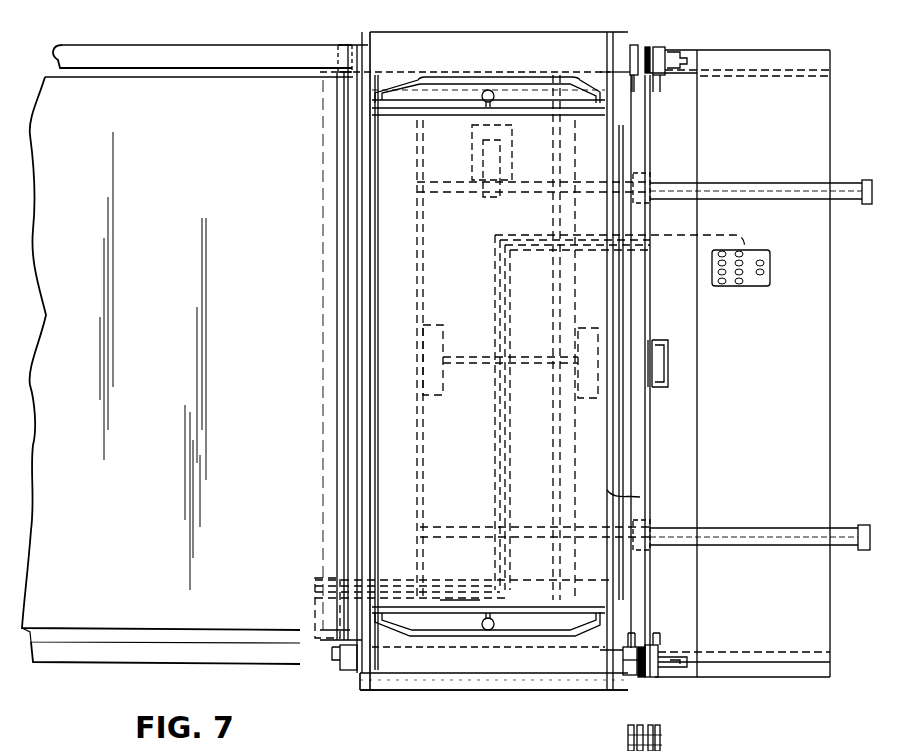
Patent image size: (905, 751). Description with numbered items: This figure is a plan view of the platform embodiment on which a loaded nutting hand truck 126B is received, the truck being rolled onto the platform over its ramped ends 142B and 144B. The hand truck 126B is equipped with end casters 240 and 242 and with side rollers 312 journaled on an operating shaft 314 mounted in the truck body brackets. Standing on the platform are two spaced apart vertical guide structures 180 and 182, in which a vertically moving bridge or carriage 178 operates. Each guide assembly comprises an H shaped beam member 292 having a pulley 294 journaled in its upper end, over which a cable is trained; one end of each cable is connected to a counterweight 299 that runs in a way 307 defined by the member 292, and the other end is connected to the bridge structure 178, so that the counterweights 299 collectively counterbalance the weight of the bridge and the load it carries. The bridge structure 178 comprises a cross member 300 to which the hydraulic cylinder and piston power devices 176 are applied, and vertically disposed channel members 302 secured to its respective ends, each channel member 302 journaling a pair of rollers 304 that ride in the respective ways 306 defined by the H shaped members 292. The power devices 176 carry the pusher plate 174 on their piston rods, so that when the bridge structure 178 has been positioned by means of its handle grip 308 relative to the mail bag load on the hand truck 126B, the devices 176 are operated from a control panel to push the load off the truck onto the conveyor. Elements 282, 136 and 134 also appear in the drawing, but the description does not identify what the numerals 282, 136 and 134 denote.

The hinge 282 is at (360, 32).
The ramped end 144B is at (462, 37).
The upper tray bracket 136 is at (532, 106).
The counterweight 299 is at (633, 43).
The vertical guide structure 182 is at (652, 41).
The way 307 is at (665, 43).
The roller 304 is at (663, 77).
The channel member 302 is at (665, 88).
The hydraulic cylinder and piston power device 176 is at (780, 184).
The end caster 242 is at (465, 147).
The side roller 312 is at (432, 325).
The operating shaft 314 is at (472, 357).
The handle grip 308 is at (668, 365).
The bridge structure 178 is at (653, 452).
The pusher plate 174 is at (640, 497).
The cross member 300 is at (637, 590).
The way 306 is at (635, 657).
The H shaped beam member 292 is at (667, 677).
The vertical guide structure 180 is at (632, 687).
The pulley 294 is at (662, 740).
The end caster 240 is at (467, 607).
The ramped end 142B is at (453, 682).
The lower tray bracket 134 is at (530, 615).
The hand truck 126B is at (494, 720).